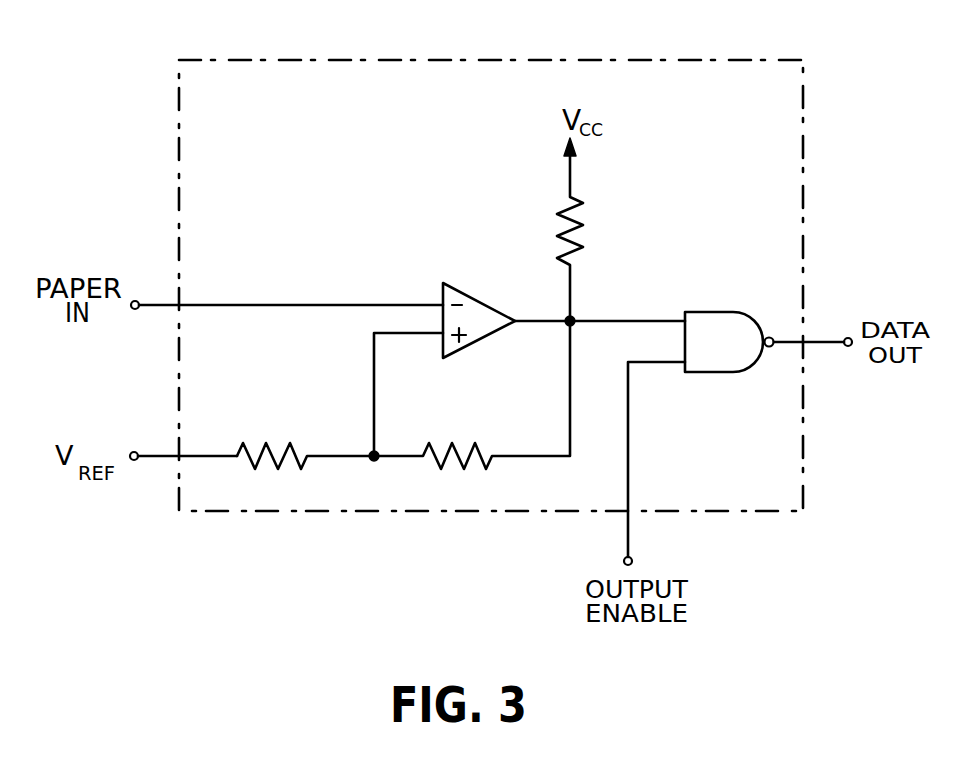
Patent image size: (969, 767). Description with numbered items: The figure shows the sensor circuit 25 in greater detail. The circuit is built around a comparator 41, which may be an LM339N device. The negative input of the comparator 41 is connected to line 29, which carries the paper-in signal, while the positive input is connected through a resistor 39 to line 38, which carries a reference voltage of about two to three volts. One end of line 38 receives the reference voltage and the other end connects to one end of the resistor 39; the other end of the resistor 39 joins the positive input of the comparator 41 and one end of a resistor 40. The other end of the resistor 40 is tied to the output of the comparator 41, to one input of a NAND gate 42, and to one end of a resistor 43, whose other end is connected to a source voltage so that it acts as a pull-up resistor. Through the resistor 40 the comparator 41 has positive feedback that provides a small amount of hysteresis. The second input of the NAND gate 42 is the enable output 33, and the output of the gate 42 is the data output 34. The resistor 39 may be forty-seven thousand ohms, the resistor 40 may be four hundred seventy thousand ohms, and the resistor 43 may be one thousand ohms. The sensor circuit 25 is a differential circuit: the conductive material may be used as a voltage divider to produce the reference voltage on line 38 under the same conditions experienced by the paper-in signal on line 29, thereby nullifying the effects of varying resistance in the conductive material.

The sensor circuit 25 is at (352, 60).
The line 29 is at (212, 305).
The enable output 33 is at (628, 425).
The data output 34 is at (790, 345).
The line 38 is at (197, 457).
The resistor 39 is at (245, 445).
The resistor 40 is at (433, 445).
The comparator 41 is at (485, 300).
The NAND gate 42 is at (725, 312).
The resistor 43 is at (583, 225).